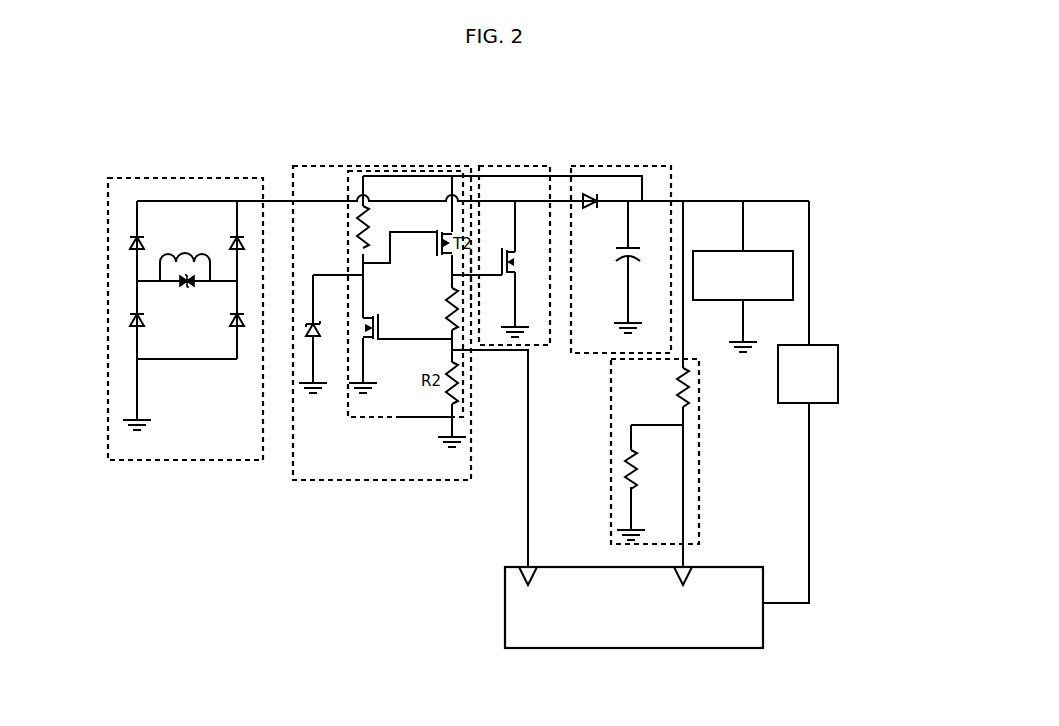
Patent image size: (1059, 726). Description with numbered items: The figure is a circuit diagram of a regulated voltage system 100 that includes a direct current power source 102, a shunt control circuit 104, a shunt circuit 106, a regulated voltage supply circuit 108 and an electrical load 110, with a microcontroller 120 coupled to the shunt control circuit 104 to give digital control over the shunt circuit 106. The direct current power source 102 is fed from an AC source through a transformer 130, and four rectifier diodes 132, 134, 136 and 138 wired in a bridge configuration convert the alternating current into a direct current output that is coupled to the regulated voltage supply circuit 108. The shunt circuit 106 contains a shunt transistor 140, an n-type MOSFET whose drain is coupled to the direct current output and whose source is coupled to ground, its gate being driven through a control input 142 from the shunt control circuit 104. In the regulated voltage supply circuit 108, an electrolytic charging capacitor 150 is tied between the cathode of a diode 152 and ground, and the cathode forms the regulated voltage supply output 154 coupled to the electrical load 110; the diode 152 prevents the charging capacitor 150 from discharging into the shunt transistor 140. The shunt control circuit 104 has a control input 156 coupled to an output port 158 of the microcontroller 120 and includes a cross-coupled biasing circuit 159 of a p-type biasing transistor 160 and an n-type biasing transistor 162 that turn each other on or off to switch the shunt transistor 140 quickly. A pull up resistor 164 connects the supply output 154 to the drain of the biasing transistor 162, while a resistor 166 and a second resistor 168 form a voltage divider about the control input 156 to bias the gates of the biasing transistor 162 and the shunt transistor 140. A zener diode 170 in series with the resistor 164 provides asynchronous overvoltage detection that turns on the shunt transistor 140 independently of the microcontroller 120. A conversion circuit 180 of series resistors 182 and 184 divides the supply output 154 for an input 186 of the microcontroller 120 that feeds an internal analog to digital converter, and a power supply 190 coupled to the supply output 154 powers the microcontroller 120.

The regulated voltage system 100 is at (517, 128).
The direct current power source 102 is at (187, 178).
The shunt control circuit 104 is at (385, 166).
The shunt circuit 106 is at (515, 166).
The regulated voltage supply circuit 108 is at (622, 166).
The electrical load 110 is at (793, 270).
The microcontroller 120 is at (745, 567).
The transformer 130 is at (165, 260).
The rectifier diode 132 is at (128, 245).
The rectifier diode 134 is at (234, 240).
The rectifier diode 136 is at (133, 326).
The rectifier diode 138 is at (236, 328).
The shunt transistor 140 is at (518, 268).
The control input 142 is at (472, 272).
The electrolytic charging capacitor 150 is at (636, 246).
The diode 152 is at (592, 190).
The regulated voltage supply output 154 is at (640, 213).
The control input 156 is at (472, 352).
The output port 158 is at (532, 567).
The cross-coupled biasing circuit 159 is at (425, 418).
The biasing transistor 160 is at (433, 248).
The biasing transistor 162 is at (380, 345).
The pull up resistor 164 is at (356, 226).
The resistor 166 is at (457, 400).
The second resistor 168 is at (447, 298).
The zener diode 170 is at (318, 340).
The conversion circuit 180 is at (700, 420).
The first resistor 182 is at (686, 372).
The second resistor 184 is at (628, 468).
The input 186 is at (688, 567).
The power supply 190 is at (806, 352).